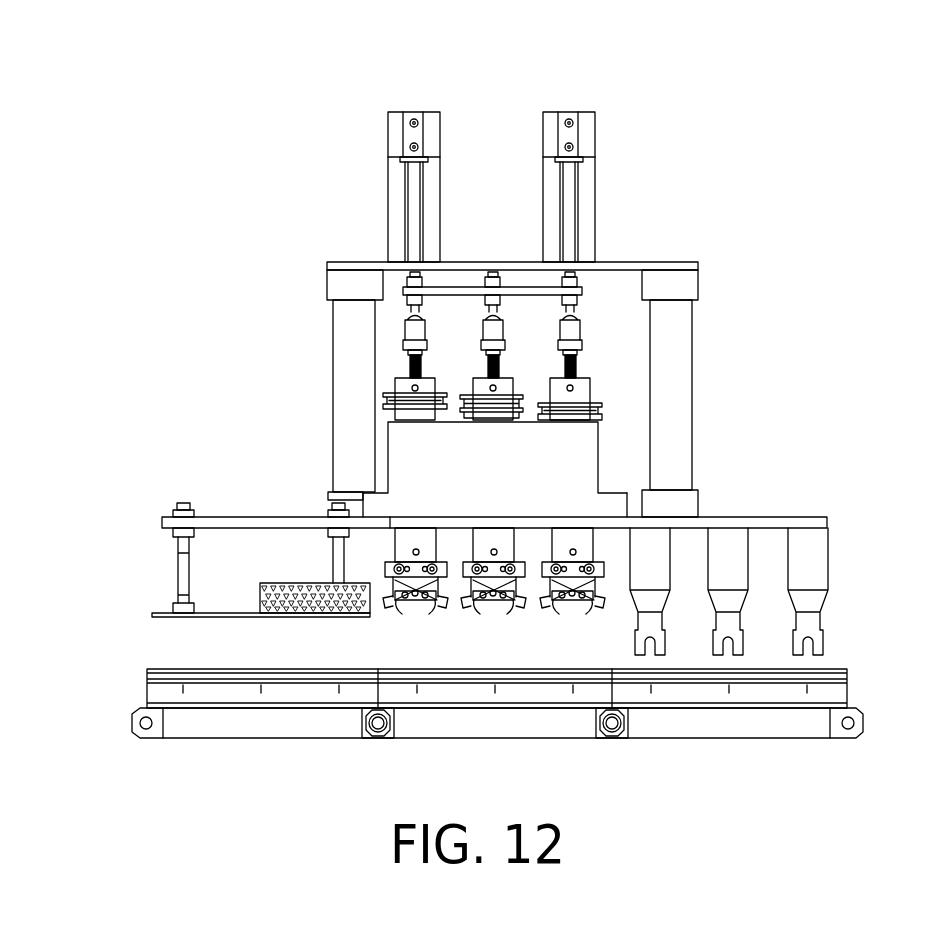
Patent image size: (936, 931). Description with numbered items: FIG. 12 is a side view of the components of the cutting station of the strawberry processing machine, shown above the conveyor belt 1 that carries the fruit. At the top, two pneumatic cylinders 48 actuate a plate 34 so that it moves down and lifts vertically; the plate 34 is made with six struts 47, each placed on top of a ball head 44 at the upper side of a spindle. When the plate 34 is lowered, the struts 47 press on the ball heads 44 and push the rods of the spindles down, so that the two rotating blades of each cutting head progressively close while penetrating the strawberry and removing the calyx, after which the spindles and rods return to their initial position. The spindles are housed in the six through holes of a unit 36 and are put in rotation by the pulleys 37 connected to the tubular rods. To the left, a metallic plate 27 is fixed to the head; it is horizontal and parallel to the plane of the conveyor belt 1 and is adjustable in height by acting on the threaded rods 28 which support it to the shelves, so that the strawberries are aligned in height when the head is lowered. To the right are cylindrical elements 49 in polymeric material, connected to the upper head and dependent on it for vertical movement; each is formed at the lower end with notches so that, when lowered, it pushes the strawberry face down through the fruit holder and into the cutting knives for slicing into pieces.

The pneumatic cylinder 48 is at (436, 151).
The plate 34 is at (461, 298).
The strut 47 is at (577, 300).
The ball head 44 is at (583, 325).
The pulley 37 is at (608, 403).
The unit 36 is at (580, 470).
The threaded rod 28 is at (180, 577).
The metallic plate 27 is at (200, 619).
The cylindrical element 49 is at (817, 570).
The conveyor belt 1 is at (838, 667).